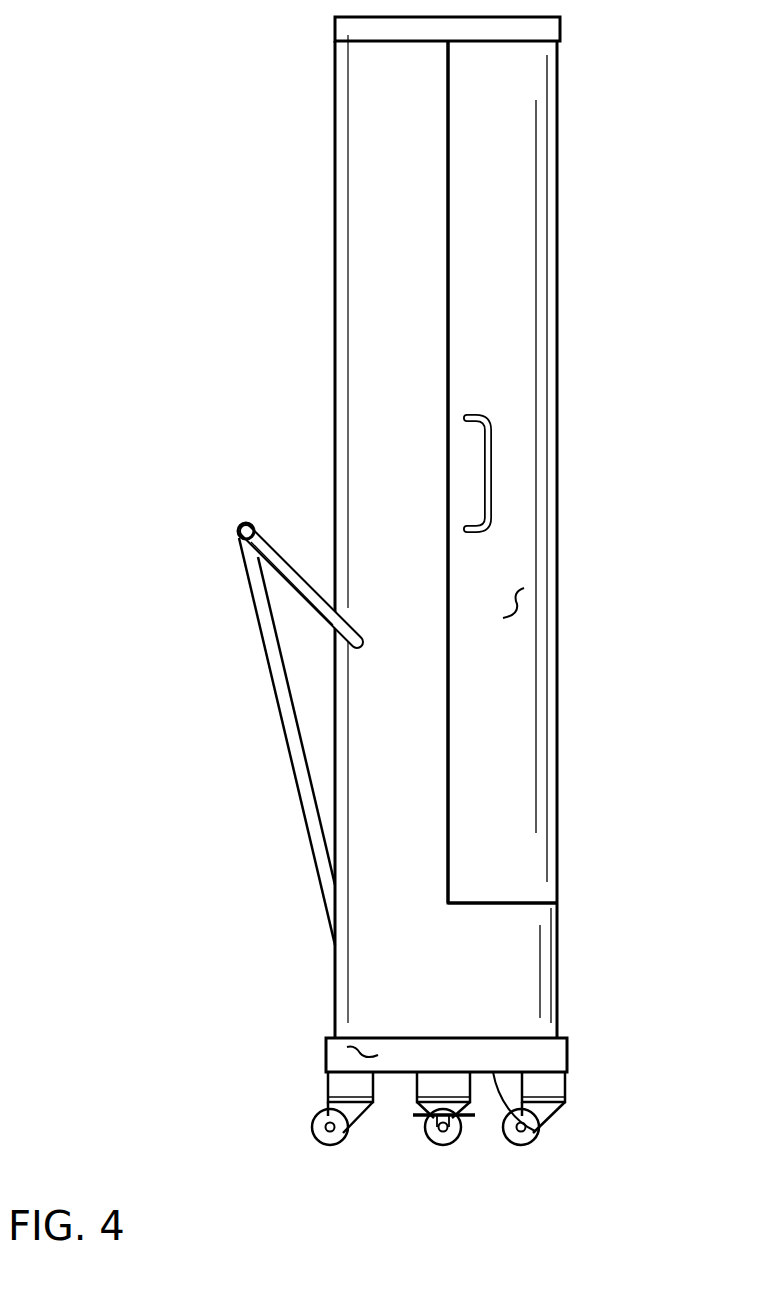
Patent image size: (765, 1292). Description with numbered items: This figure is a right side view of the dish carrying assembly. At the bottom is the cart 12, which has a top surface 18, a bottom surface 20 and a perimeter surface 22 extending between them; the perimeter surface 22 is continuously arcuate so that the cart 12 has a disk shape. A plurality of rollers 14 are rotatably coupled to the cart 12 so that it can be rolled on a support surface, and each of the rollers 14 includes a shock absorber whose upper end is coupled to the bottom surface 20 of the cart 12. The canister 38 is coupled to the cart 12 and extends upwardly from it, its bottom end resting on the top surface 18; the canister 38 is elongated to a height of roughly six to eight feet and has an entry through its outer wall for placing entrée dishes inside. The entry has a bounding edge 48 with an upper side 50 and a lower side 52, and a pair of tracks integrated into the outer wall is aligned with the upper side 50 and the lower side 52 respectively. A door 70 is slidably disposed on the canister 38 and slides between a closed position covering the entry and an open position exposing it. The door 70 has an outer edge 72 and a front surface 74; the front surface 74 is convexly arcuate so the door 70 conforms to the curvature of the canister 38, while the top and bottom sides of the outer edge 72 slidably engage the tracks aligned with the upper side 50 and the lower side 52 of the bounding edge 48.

The cart 12 is at (567, 1055).
The rollers 14 is at (338, 1168).
The top surface 18 is at (540, 1007).
The bottom surface 20 is at (532, 1122).
The perimeter surface 22 is at (355, 1050).
The canister 38 is at (352, 108).
The bounding edge 48 is at (525, 41).
The upper side 50 is at (488, 41).
The lower side 52 is at (508, 903).
The door 70 is at (527, 340).
The outer edge 72 is at (448, 310).
The front surface 74 is at (521, 598).